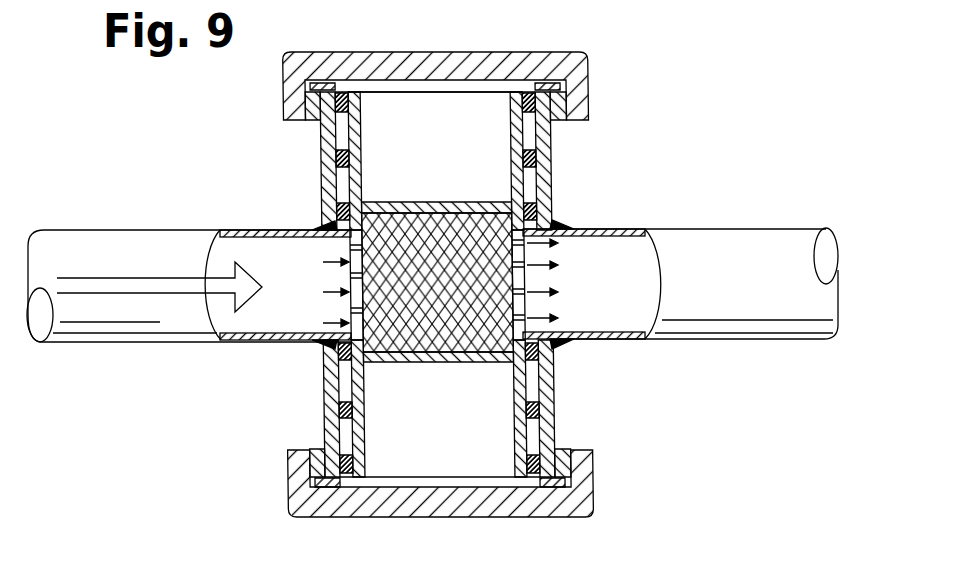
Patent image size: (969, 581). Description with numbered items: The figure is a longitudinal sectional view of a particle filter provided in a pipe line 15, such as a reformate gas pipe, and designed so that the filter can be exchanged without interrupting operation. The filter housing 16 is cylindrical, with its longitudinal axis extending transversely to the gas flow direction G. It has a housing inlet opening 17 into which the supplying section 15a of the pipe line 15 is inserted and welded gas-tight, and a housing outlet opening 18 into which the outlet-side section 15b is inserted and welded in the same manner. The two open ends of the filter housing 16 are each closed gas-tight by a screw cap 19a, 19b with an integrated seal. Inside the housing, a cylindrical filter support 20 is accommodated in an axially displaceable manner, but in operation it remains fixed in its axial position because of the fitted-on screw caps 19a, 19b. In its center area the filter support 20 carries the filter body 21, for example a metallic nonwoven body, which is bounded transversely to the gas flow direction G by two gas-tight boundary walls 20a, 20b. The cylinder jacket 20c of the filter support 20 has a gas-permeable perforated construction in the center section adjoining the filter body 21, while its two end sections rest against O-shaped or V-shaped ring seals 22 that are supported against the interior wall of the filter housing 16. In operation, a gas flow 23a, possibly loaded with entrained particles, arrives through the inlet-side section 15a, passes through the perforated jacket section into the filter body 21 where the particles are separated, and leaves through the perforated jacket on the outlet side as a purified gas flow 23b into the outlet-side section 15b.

The pipe line 15 is at (432, 254).
The supplying section of the pipe line 15a is at (112, 242).
The outlet-side section of the pipe line 15b is at (683, 243).
The filter housing 16 is at (543, 163).
The housing inlet opening 17 is at (290, 334).
The housing outlet opening 18 is at (576, 336).
The screw cap 19a is at (576, 79).
The screw cap 19b is at (587, 488).
The filter support 20 is at (358, 438).
The gas-tight boundary wall 20a is at (370, 205).
The gas-tight boundary wall 20b is at (490, 363).
The cylinder jacket of the filter support 20c is at (349, 96).
The filter body 21 is at (400, 332).
The ring seals 22 is at (340, 152).
The gas flow 23a is at (327, 290).
The gas flow purified of the entrained particles 23b is at (541, 266).
The gas flow direction G is at (155, 285).